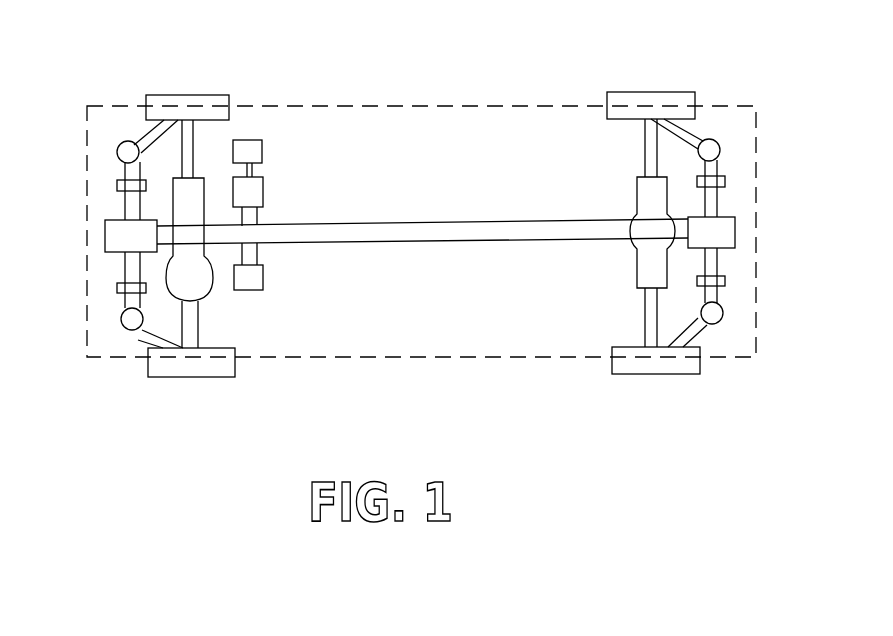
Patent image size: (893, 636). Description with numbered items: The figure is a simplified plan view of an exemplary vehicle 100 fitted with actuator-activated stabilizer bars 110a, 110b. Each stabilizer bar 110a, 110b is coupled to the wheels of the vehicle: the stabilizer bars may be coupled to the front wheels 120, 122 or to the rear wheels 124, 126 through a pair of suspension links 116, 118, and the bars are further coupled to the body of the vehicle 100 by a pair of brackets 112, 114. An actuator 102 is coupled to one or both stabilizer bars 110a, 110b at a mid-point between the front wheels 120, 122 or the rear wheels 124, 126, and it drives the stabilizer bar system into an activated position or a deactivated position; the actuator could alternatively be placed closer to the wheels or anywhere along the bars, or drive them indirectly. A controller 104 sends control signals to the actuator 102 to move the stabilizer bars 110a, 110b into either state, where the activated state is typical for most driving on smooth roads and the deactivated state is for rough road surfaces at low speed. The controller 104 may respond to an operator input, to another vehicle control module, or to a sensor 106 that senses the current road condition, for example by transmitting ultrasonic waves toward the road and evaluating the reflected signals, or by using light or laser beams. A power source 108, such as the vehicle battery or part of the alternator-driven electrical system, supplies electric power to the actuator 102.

The vehicle 100 is at (86, 113).
The actuator 102 is at (105, 236).
The controller 104 is at (263, 186).
The sensor 106 is at (248, 140).
The power source 108 is at (250, 290).
The stabilizer bar 110a is at (719, 202).
The stabilizer bar 110b is at (125, 203).
The bracket 112 is at (117, 184).
The bracket 114 is at (117, 287).
The suspension link 116 is at (143, 138).
The suspension link 118 is at (143, 335).
The front wheel 120 is at (640, 92).
The front wheel 122 is at (662, 374).
The rear wheel 124 is at (146, 96).
The rear wheel 126 is at (148, 377).